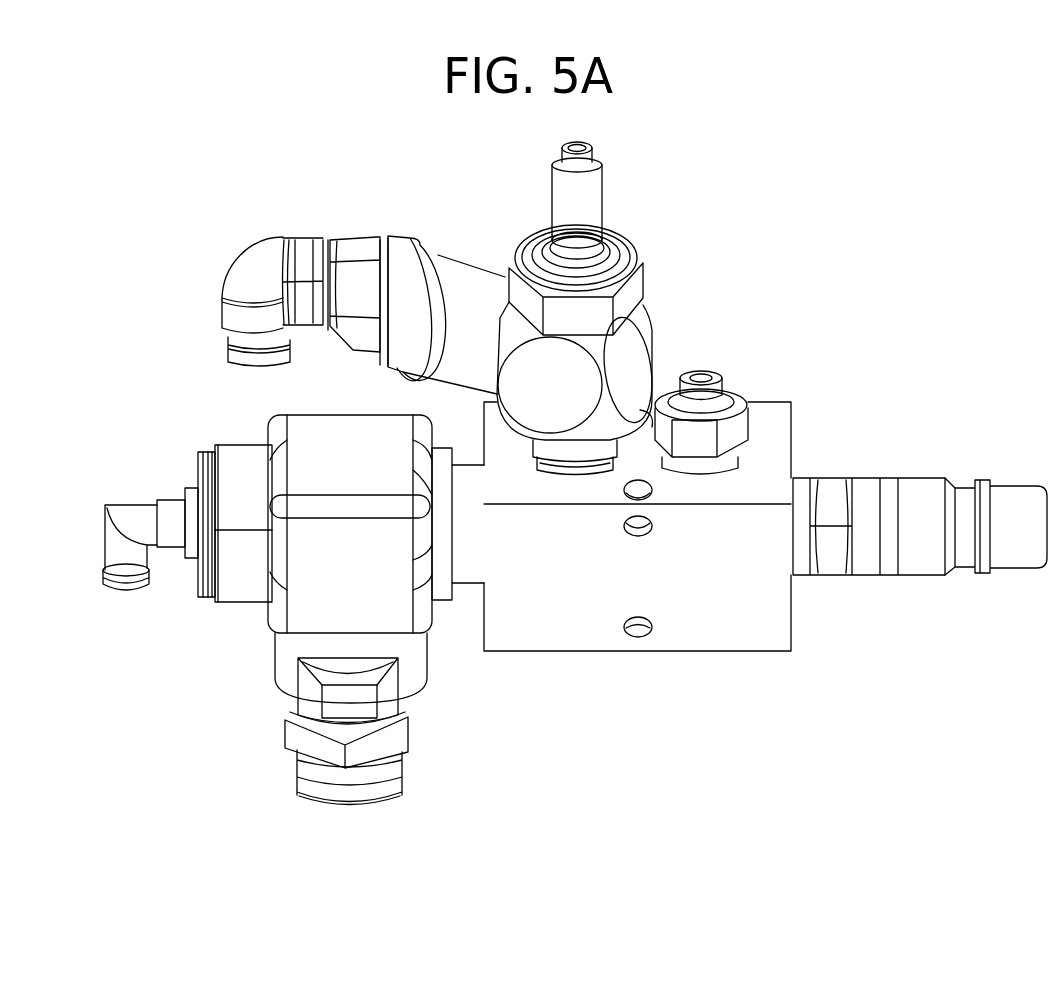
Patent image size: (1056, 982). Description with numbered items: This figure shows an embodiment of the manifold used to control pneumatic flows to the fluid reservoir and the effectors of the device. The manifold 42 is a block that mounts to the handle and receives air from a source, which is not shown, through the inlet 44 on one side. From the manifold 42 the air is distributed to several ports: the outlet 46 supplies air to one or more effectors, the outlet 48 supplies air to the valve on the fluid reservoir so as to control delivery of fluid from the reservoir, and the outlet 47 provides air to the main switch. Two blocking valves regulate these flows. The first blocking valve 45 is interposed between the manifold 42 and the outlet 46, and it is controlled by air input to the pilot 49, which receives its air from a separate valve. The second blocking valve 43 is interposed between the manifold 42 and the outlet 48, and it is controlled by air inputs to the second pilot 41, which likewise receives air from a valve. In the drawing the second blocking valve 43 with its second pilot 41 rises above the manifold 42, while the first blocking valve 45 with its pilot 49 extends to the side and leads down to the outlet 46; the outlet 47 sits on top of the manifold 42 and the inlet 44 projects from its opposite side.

The second pilot 41 is at (598, 193).
The manifold 42 is at (725, 638).
The second blocking valve 43 is at (638, 347).
The inlet 44 is at (912, 487).
The first blocking valve 45 is at (273, 625).
The outlet 46 is at (408, 736).
The outlet 47 is at (740, 400).
The outlet 48 is at (255, 262).
The pilot 49 is at (152, 566).